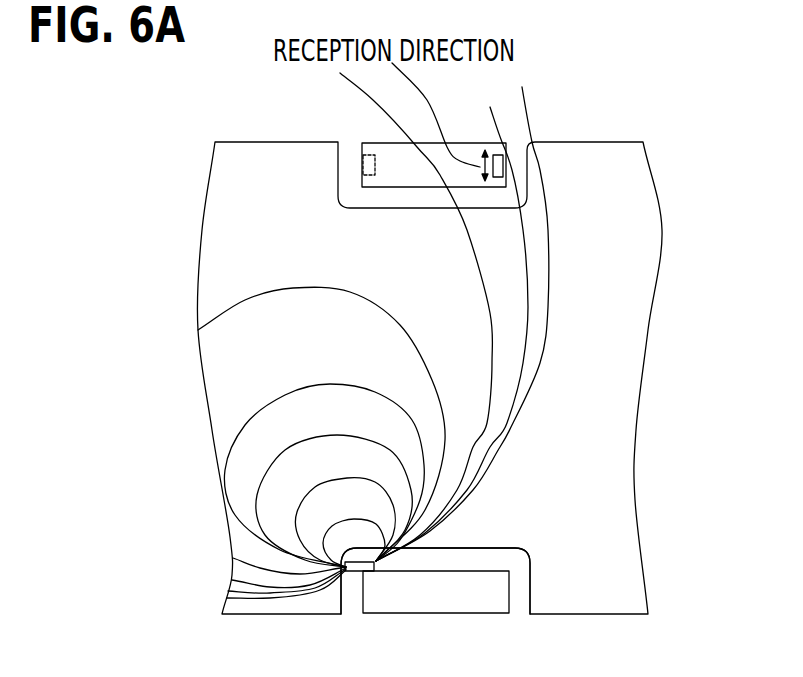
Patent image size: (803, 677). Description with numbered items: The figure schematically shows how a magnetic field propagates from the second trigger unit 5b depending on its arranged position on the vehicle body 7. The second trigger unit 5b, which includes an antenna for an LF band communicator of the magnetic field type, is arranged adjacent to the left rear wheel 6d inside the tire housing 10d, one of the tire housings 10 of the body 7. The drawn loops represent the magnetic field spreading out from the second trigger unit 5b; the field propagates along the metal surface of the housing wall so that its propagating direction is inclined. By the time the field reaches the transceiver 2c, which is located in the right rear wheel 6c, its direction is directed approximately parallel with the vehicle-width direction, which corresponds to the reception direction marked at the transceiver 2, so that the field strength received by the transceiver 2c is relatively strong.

The transceiver 2 is at (469, 126).
The transceiver 2c is at (497, 152).
The second trigger unit 5b is at (361, 573).
The right rear wheel 6c is at (380, 142).
The left rear wheel 6d is at (445, 615).
The body 7 is at (593, 142).
The tire housing 10 is at (466, 612).
The tire housing 10d is at (530, 592).